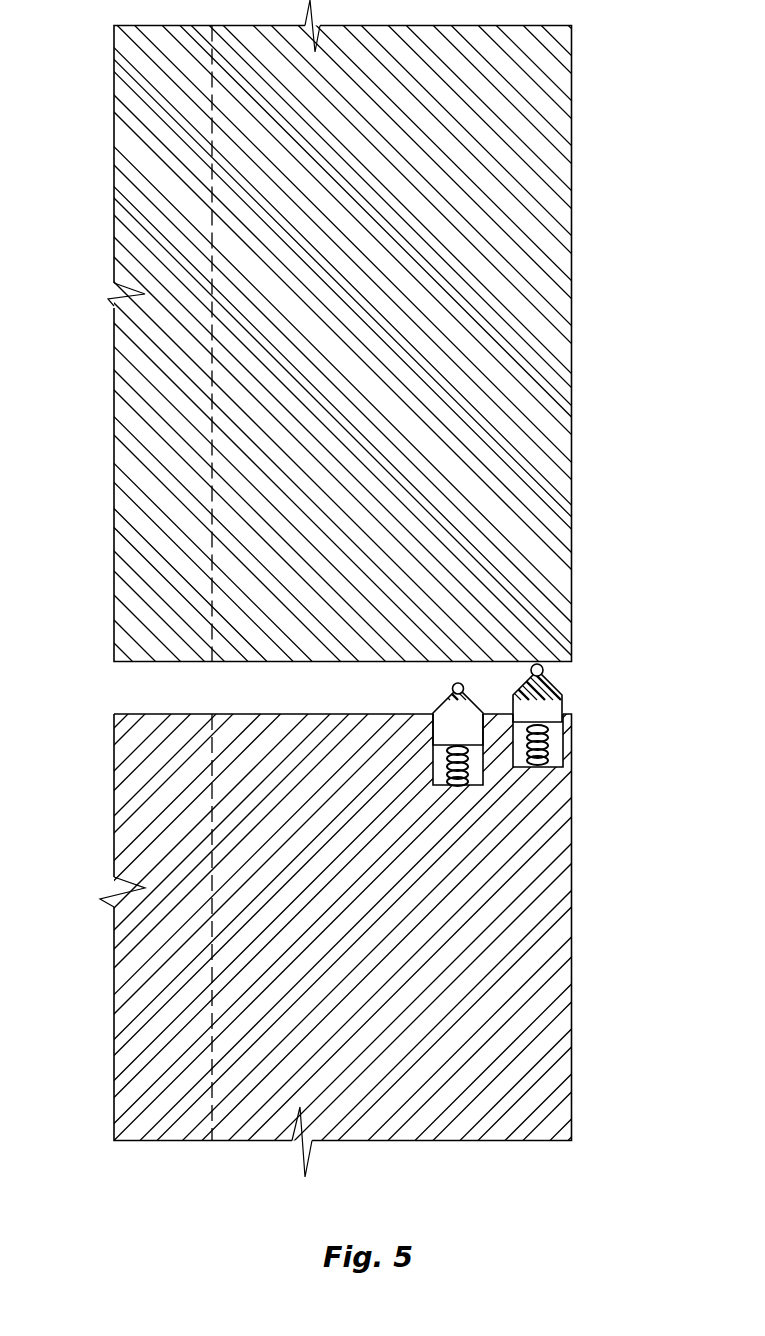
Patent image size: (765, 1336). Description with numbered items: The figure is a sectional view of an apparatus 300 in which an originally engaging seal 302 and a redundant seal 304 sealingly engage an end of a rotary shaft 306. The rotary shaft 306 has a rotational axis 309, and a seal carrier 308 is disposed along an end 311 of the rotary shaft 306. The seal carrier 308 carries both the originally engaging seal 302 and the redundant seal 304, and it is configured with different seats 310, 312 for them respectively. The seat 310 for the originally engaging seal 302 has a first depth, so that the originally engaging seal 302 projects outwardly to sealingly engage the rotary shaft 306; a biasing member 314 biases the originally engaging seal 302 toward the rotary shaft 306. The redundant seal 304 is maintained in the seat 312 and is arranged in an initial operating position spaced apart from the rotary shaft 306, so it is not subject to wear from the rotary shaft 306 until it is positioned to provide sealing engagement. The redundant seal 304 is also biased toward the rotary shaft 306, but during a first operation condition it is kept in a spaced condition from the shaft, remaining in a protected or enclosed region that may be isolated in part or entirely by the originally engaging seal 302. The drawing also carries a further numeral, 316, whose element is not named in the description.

The apparatus 300 is at (629, 422).
The originally engaging seal 302 is at (563, 697).
The redundant seal 304 is at (448, 703).
The rotary shaft 306 is at (572, 485).
The seal carrier 308 is at (572, 847).
The rotational axis 309 is at (212, 179).
The seat 310 is at (563, 747).
The end 311 is at (568, 671).
The seat 312 is at (485, 773).
The biasing member 314 is at (563, 737).
The spring 316 is at (448, 770).